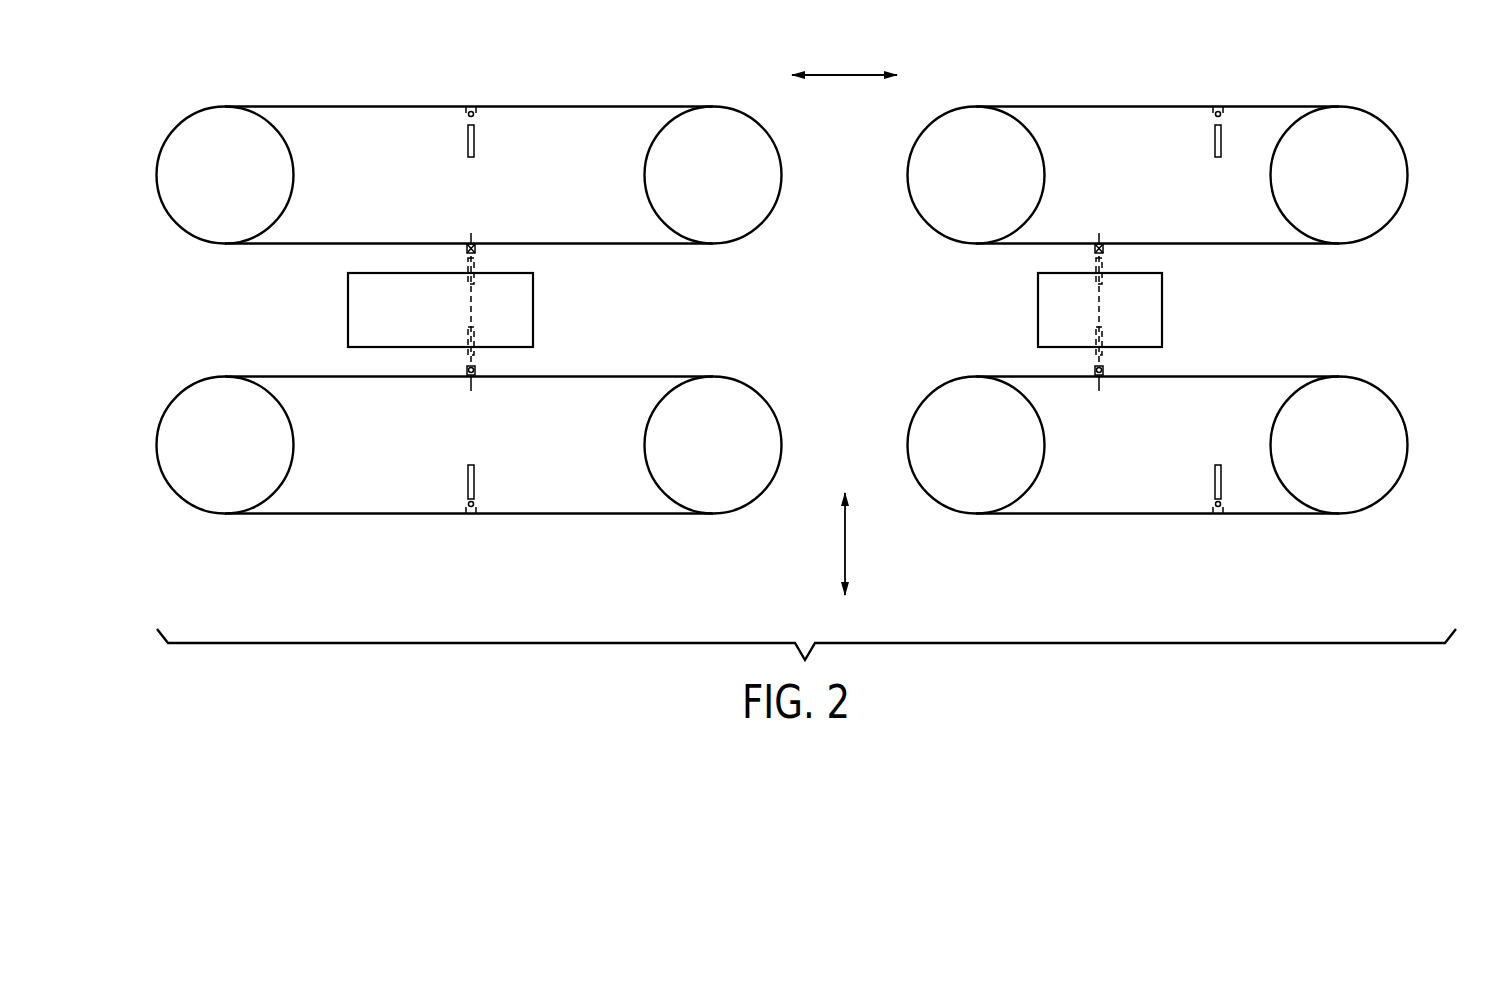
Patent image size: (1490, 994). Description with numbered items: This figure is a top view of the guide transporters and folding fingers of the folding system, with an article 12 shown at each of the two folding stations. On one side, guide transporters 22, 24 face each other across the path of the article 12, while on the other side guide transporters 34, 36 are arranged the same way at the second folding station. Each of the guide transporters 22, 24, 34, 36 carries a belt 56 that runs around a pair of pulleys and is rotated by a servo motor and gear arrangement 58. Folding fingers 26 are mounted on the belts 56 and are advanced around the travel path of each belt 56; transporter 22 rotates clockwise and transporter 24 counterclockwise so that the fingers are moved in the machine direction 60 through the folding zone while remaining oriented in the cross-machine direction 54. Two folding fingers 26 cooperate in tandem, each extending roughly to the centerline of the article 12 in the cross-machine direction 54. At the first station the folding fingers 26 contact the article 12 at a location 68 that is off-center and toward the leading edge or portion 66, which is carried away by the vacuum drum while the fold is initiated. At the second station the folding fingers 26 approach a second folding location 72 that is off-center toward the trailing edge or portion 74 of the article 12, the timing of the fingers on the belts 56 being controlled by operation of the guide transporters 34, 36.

The article 12 is at (322, 290).
The guide transporter 22 is at (148, 435).
The guide transporter 24 is at (148, 165).
The folding finger 26 is at (476, 265).
The guide transporter 34 is at (1422, 435).
The guide transporter 36 is at (1422, 165).
The cross-machine direction 54 is at (845, 542).
The belt 56 is at (784, 312).
The servo motor and gear arrangement 58 is at (281, 194).
The machine direction 60 is at (845, 75).
The leading edge or portion 66 is at (553, 335).
The section or location 68 is at (471, 222).
The second folding section or location 72 is at (1099, 222).
The trailing edge or portion 74 is at (336, 337).